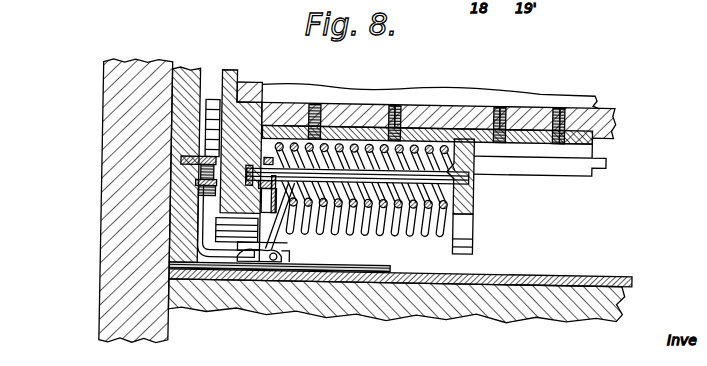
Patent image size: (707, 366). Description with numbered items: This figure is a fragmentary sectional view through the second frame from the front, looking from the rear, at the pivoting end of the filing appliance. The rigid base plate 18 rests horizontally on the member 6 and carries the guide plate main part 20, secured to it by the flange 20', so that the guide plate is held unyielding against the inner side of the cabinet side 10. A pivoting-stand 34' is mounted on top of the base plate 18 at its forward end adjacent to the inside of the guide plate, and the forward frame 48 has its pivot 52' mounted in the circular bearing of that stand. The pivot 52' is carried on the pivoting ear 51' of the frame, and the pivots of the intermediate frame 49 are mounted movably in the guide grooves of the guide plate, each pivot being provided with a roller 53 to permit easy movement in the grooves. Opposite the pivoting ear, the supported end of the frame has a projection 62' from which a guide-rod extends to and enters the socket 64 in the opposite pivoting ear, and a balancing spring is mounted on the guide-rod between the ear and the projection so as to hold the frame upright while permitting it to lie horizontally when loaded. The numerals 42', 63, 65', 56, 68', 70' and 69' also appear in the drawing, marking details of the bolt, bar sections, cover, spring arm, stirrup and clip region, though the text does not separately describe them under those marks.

The cabinet side 10 is at (110, 104).
The guide plate main part 20 is at (197, 149).
The bolt head 42' is at (133, 153).
The pivot 52' is at (133, 179).
The pivoting-stand 34' is at (149, 220).
The pivoting ear 51' is at (160, 203).
The roller 53 is at (251, 84).
The socket 64 is at (212, 152).
The bar section 63 is at (366, 104).
The bar section 65' is at (443, 161).
The intermediate frame 49 is at (479, 107).
The cover plate 56 is at (550, 96).
The forward frame 48 is at (606, 153).
The projection 62' is at (480, 176).
The lever 68' is at (276, 222).
The flange 20' is at (279, 256).
The base plate 18 is at (553, 279).
The spacer 70' is at (237, 285).
The pivot base 69' is at (285, 295).
The member 6 is at (414, 306).